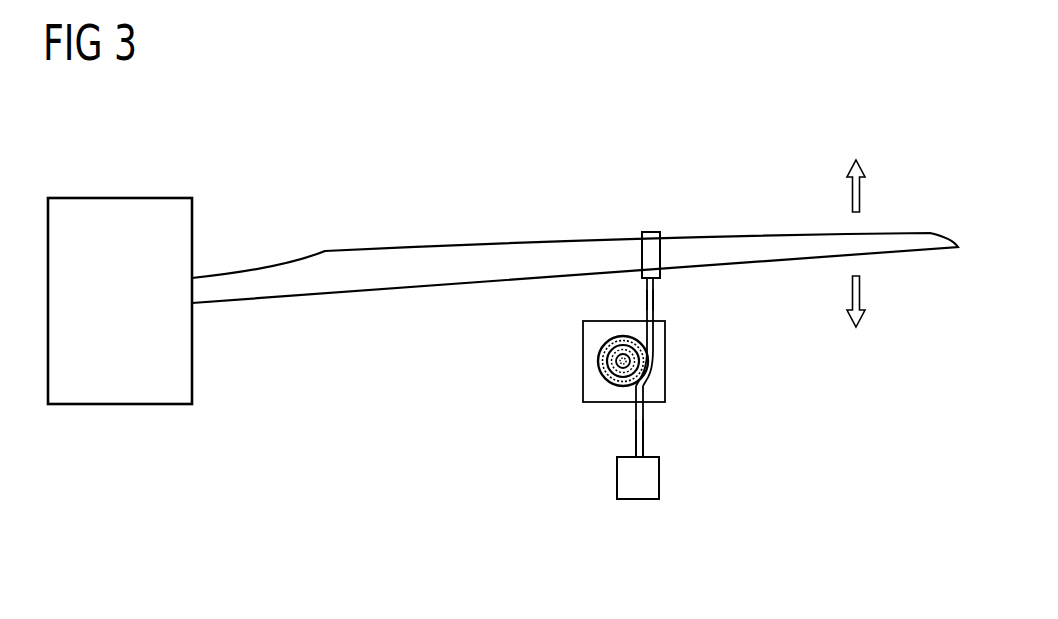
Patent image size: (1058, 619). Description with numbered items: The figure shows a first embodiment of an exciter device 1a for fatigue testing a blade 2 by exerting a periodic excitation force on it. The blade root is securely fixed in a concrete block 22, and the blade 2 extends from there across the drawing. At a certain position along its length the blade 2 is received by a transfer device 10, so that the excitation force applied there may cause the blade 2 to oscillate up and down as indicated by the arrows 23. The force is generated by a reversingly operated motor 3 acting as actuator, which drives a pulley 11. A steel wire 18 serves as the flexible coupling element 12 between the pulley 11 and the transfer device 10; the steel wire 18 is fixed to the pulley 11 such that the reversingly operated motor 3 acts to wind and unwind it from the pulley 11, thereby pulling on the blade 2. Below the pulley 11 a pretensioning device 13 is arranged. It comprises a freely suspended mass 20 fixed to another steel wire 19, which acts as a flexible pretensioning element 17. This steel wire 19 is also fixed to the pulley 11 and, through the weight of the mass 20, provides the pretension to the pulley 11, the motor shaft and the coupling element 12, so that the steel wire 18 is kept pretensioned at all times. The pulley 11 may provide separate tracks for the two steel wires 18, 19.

The exciter device 1a is at (757, 497).
The blade 2 is at (400, 248).
The motor 3 is at (665, 356).
The transfer device 10 is at (650, 232).
The pulley 11 is at (605, 366).
The flexible coupling element 12 is at (662, 294).
The pretensioning device 13 is at (603, 451).
The flexible pretensioning element 17 is at (653, 427).
The steel wire 18 is at (647, 300).
The steel wire 19 is at (634, 432).
The mass 20 is at (635, 499).
The concrete block 22 is at (113, 198).
The arrows 23 is at (860, 190).